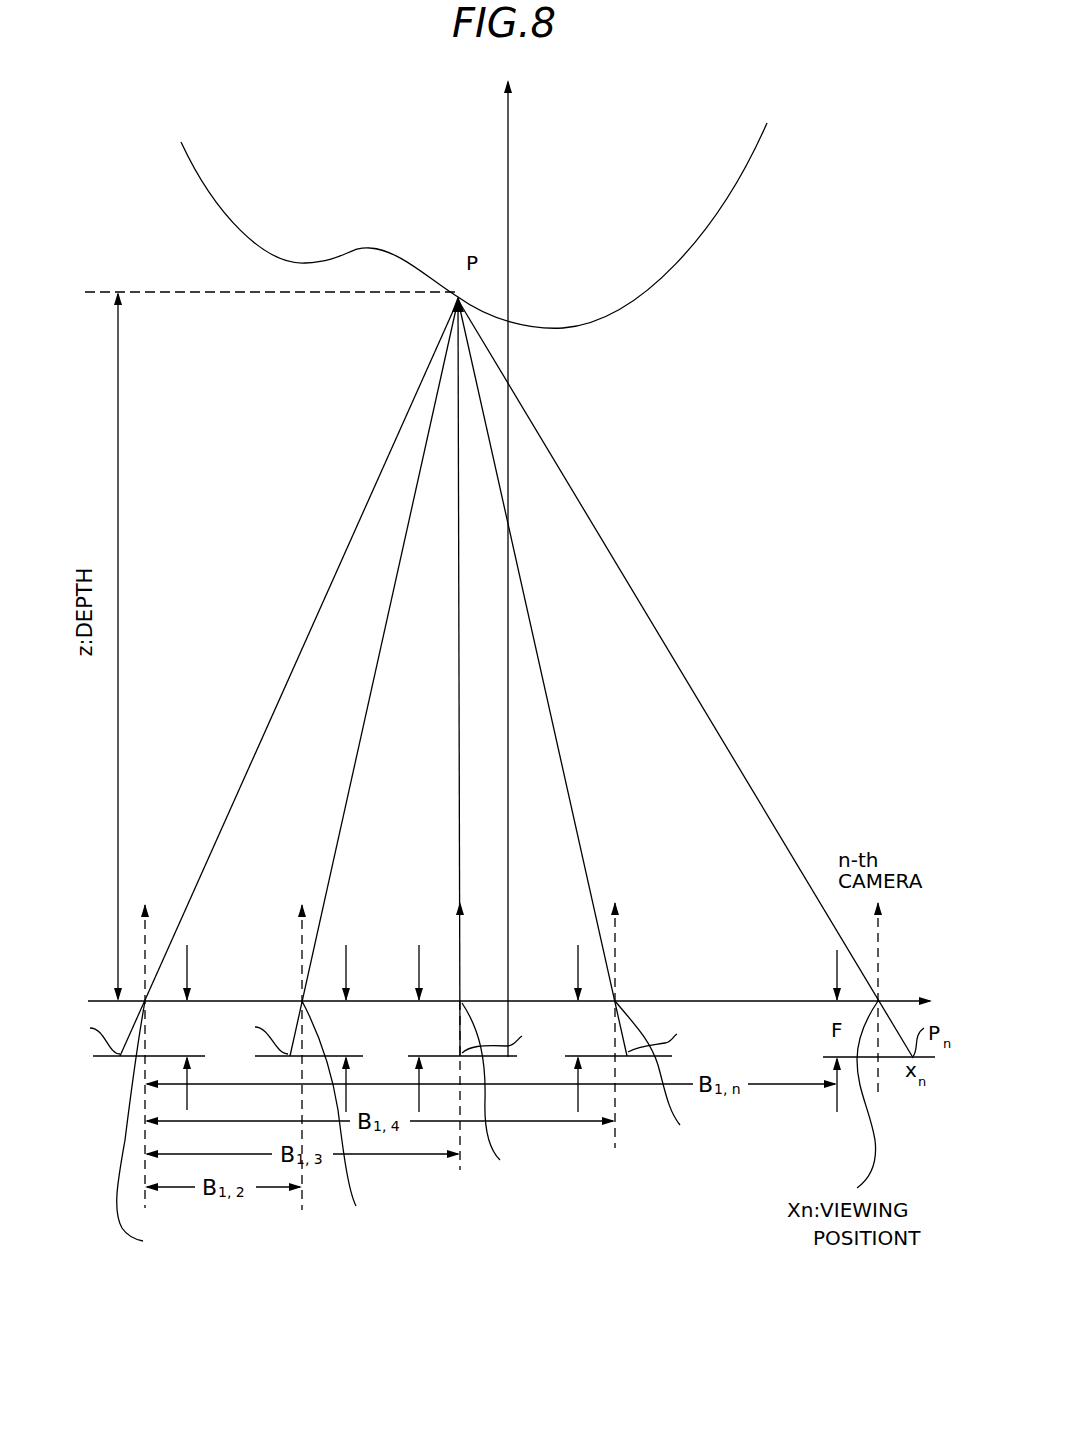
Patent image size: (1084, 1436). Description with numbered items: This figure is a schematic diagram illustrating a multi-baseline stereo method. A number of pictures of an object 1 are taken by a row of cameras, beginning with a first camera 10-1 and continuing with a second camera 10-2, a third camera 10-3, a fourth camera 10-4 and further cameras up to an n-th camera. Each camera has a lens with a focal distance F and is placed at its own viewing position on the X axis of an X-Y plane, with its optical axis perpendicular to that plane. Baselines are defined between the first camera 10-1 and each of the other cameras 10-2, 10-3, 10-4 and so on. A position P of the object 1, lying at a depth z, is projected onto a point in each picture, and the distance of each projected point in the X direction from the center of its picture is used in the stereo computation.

The object 1 is at (680, 282).
The first camera 10-1 is at (182, 1035).
The second camera 10-2 is at (345, 1043).
The third camera 10-3 is at (488, 1022).
The fourth camera 10-4 is at (674, 1004).